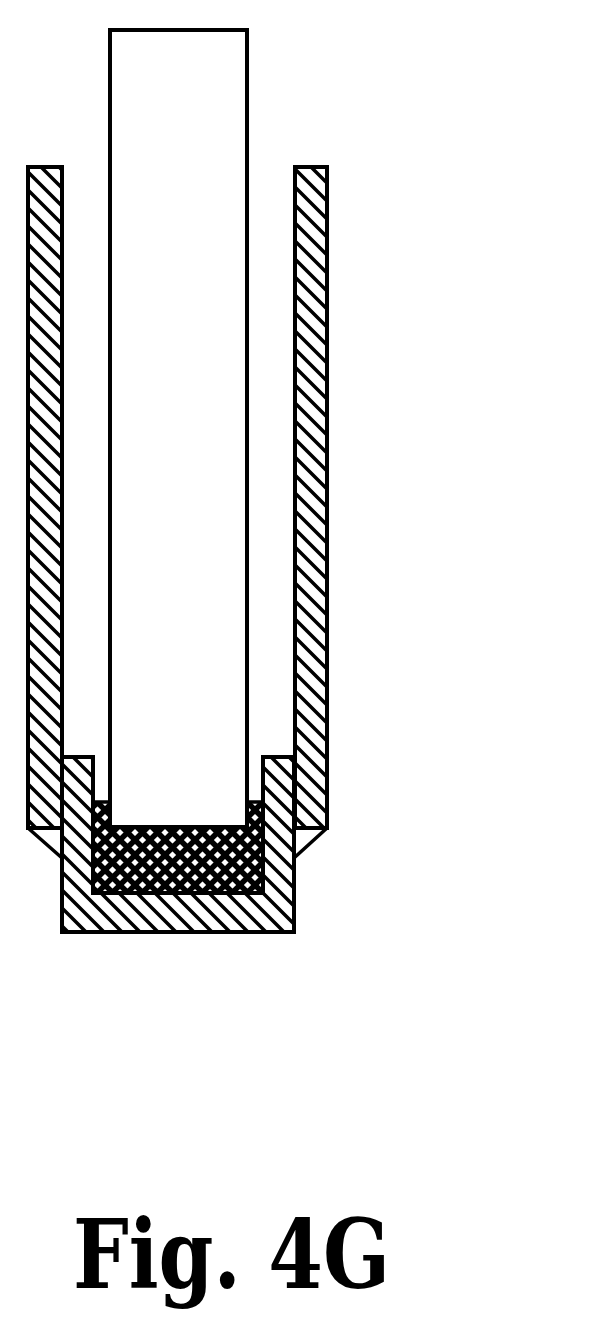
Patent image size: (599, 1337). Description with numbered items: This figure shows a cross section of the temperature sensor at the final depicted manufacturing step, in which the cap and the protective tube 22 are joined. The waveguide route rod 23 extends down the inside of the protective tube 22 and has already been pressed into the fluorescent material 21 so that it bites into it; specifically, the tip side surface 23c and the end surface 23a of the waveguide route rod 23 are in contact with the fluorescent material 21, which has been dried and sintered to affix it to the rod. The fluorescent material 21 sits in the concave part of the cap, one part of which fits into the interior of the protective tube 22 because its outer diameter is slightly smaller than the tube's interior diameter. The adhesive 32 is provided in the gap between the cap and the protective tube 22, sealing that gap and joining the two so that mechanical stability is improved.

The fluorescent material 21 is at (277, 932).
The protective tube 22 is at (313, 502).
The waveguide route rod 23 is at (207, 163).
The end surface 23a is at (165, 895).
The tip side surface 23c is at (262, 802).
The adhesive 32 is at (320, 837).